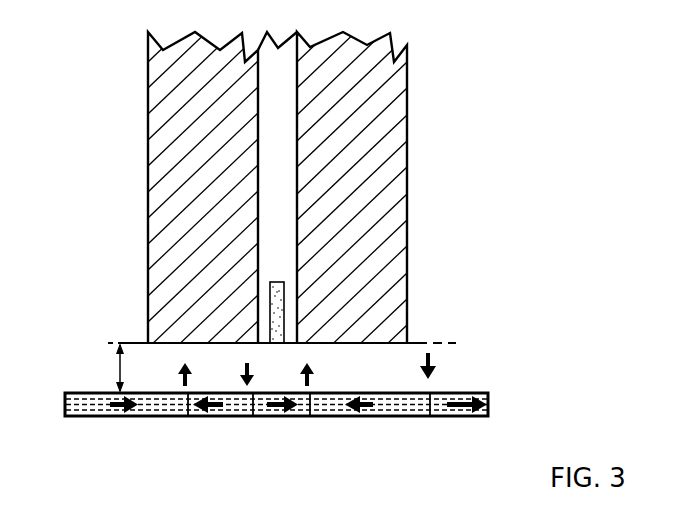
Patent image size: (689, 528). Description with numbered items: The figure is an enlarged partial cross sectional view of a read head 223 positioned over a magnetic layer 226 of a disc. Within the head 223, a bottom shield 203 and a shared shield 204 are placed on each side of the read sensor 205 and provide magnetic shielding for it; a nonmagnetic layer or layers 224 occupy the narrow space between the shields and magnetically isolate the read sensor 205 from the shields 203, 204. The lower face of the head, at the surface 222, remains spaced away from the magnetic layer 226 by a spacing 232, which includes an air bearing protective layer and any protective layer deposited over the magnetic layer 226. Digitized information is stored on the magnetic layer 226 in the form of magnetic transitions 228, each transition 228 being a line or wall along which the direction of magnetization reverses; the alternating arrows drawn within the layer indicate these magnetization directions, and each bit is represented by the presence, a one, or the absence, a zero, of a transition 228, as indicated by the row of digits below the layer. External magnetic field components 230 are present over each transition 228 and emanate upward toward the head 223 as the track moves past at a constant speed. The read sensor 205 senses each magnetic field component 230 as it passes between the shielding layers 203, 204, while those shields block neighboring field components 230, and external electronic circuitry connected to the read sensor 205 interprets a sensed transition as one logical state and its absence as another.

The bottom shield 203 is at (170, 88).
The shared shield 204 is at (347, 128).
The read sensor 205 is at (276, 283).
The air bearing surface 222 is at (418, 343).
The head 223 is at (458, 48).
The nonmagnetic layer 224 is at (270, 63).
The magnetic layer 226 is at (512, 390).
The transition 228 is at (428, 417).
The magnetic field component 230 is at (430, 355).
The spacing 232 is at (102, 367).